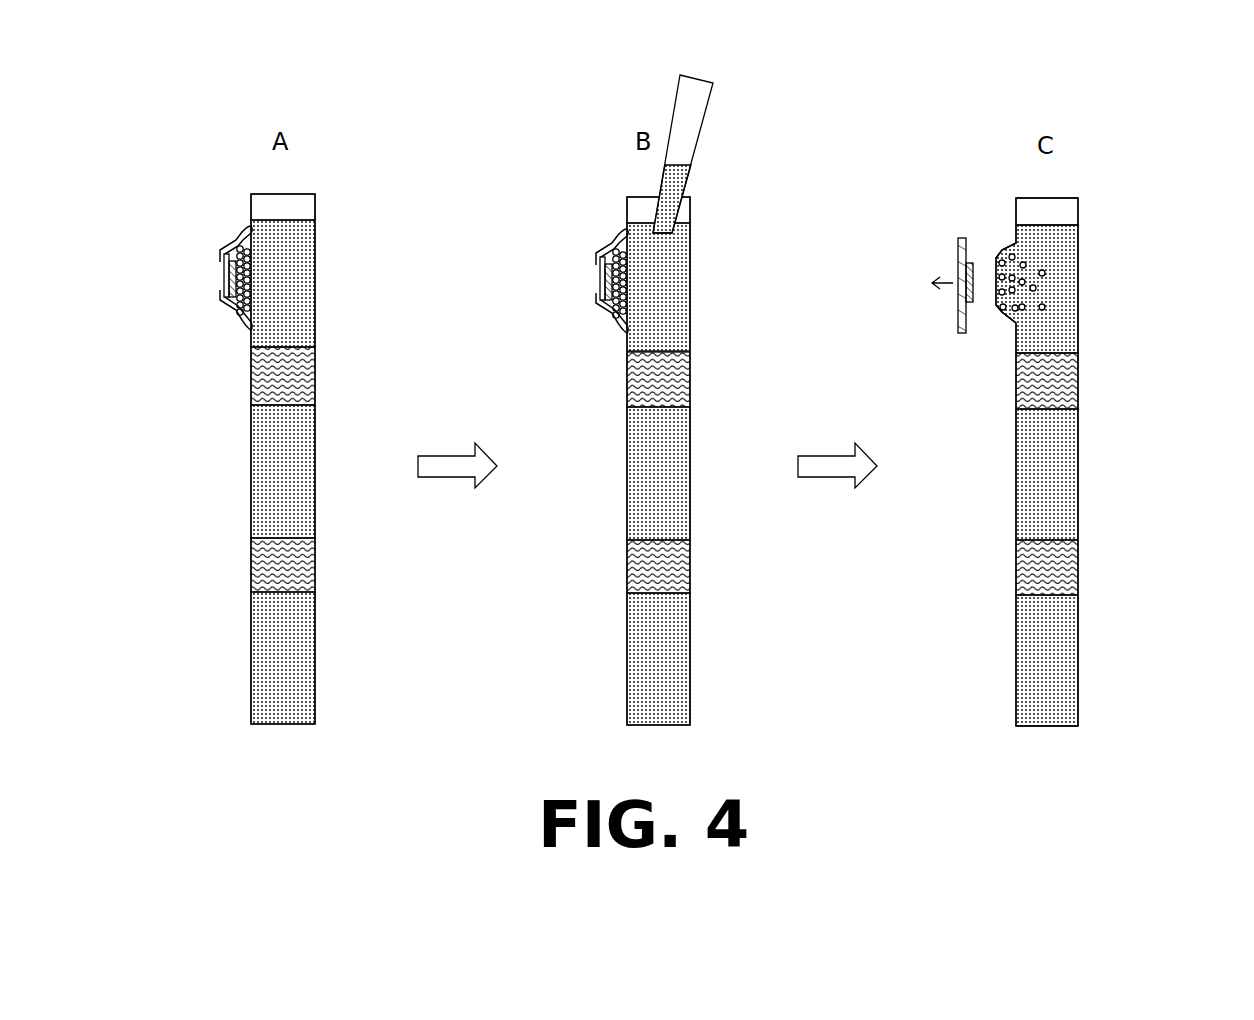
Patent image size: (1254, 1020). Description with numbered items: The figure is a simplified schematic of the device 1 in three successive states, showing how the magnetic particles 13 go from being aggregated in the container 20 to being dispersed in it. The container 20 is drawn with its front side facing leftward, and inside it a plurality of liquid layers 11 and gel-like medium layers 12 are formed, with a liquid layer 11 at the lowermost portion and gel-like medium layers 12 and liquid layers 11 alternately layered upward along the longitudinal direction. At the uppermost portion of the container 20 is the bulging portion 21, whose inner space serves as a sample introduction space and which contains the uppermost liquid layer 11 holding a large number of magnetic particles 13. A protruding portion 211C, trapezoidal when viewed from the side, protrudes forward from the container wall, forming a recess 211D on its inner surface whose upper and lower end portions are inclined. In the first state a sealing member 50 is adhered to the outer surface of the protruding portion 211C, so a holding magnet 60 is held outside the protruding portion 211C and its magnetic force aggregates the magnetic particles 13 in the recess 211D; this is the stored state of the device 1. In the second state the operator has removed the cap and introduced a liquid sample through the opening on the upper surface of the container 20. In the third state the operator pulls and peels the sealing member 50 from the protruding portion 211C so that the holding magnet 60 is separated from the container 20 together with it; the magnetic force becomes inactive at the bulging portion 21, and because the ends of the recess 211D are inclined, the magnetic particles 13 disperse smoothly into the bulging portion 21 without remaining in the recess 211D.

The device 1 is at (209, 426).
The liquid layer 11 is at (307, 327).
The gel-like medium layer 12 is at (253, 378).
The magnetic particles 13 is at (257, 280).
The container 20 is at (328, 238).
The bulging portion 21 is at (315, 262).
The protruding portion 211C is at (224, 300).
The recess 211D is at (246, 228).
The sealing member 50 is at (224, 252).
The holding magnet 60 is at (228, 284).